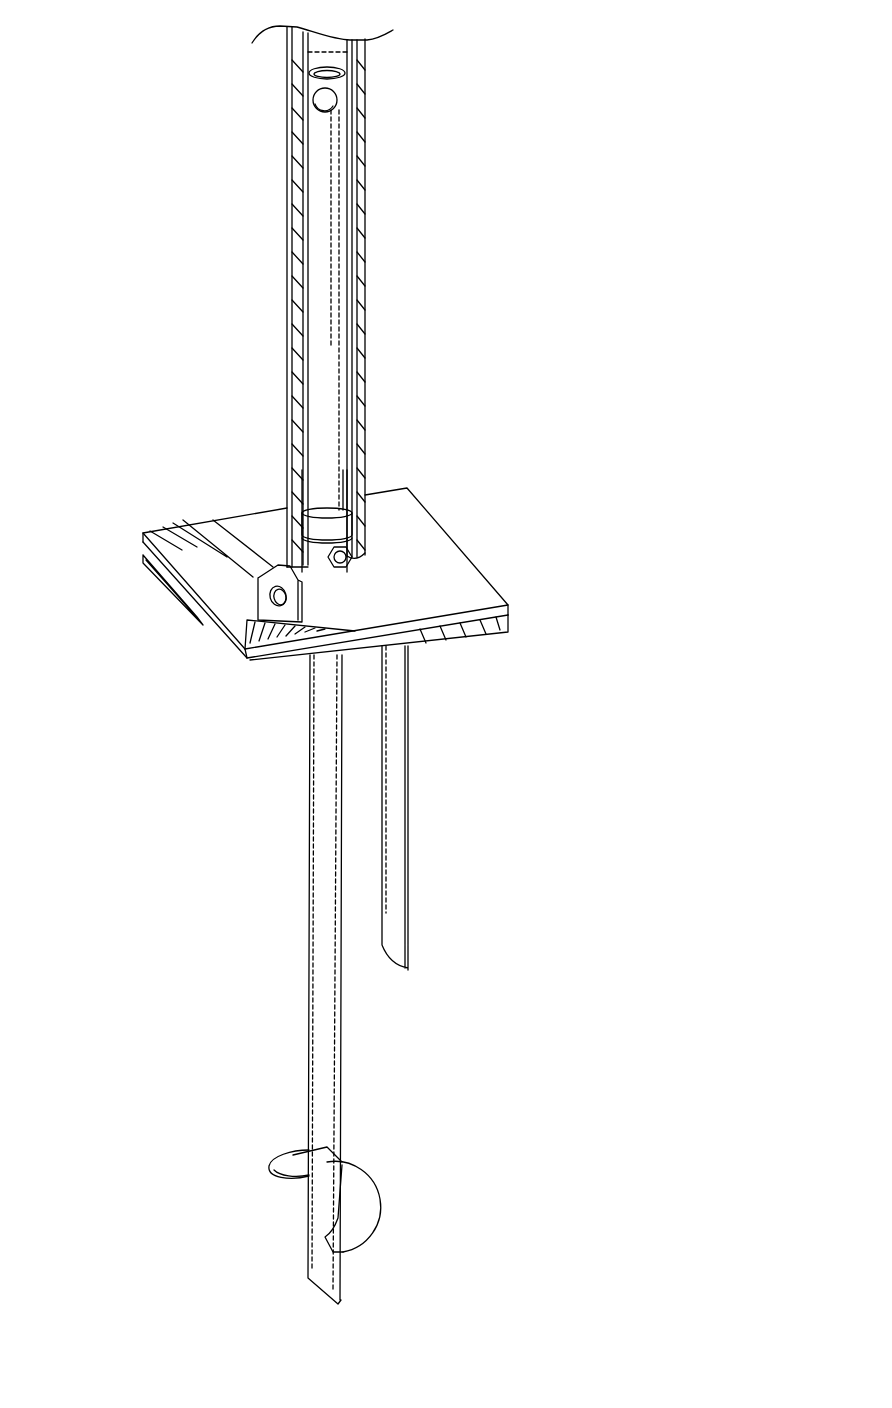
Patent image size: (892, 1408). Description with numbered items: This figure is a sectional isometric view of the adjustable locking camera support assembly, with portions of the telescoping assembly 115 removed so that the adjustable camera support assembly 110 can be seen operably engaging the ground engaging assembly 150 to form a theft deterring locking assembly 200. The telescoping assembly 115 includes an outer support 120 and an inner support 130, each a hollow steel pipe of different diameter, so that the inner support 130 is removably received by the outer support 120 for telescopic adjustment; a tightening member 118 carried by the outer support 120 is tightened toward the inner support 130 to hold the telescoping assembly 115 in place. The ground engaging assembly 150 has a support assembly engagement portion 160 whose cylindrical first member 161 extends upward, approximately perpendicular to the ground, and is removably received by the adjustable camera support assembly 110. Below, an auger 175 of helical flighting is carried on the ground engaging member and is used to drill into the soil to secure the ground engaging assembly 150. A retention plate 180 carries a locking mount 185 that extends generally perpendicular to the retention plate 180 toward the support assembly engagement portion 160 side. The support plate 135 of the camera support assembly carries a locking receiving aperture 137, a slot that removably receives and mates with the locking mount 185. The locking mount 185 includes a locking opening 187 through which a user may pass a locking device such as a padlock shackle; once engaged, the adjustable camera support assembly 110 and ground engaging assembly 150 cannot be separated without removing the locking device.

The adjustable camera support assembly 110 is at (240, 248).
The telescoping assembly 115 is at (386, 185).
The tightening member 118 is at (360, 563).
The outer support 120 is at (360, 96).
The inner support 130 is at (290, 58).
The support plate 135 is at (173, 543).
The locking receiving aperture 137 is at (303, 643).
The ground engaging assembly 150 is at (261, 935).
The support assembly engagement portion 160 is at (330, 347).
The first member 161 is at (328, 268).
The auger 175 is at (355, 1197).
The retention plate 180 is at (493, 605).
The locking mount 185 is at (197, 615).
The locking opening 187 is at (275, 605).
The locking assembly 200 is at (471, 470).